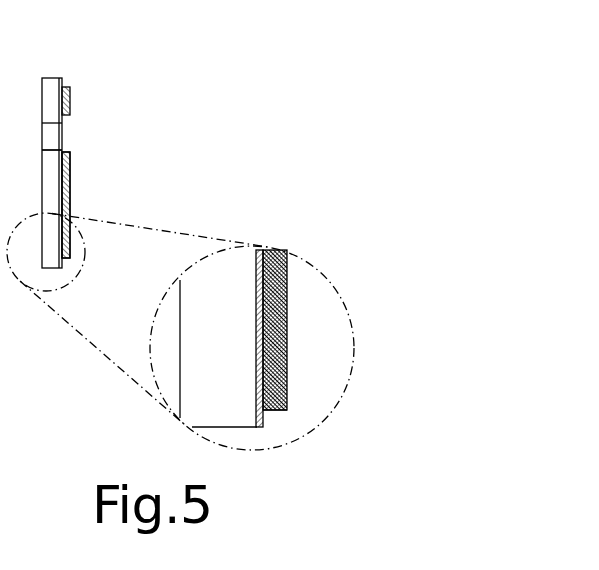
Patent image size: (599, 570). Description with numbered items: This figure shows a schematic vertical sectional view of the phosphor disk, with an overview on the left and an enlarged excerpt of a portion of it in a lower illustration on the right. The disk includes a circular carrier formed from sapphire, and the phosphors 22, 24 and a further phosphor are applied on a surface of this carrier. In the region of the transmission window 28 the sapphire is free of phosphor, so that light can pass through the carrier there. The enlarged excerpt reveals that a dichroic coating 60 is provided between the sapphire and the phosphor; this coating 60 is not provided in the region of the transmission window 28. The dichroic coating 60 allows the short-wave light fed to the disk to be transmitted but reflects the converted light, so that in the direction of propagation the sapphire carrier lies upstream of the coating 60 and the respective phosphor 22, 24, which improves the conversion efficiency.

The phosphor 22 is at (70, 100).
The phosphor 24 is at (70, 185).
The transmission window 28 is at (62, 140).
The dichroic coating 60 is at (263, 420).